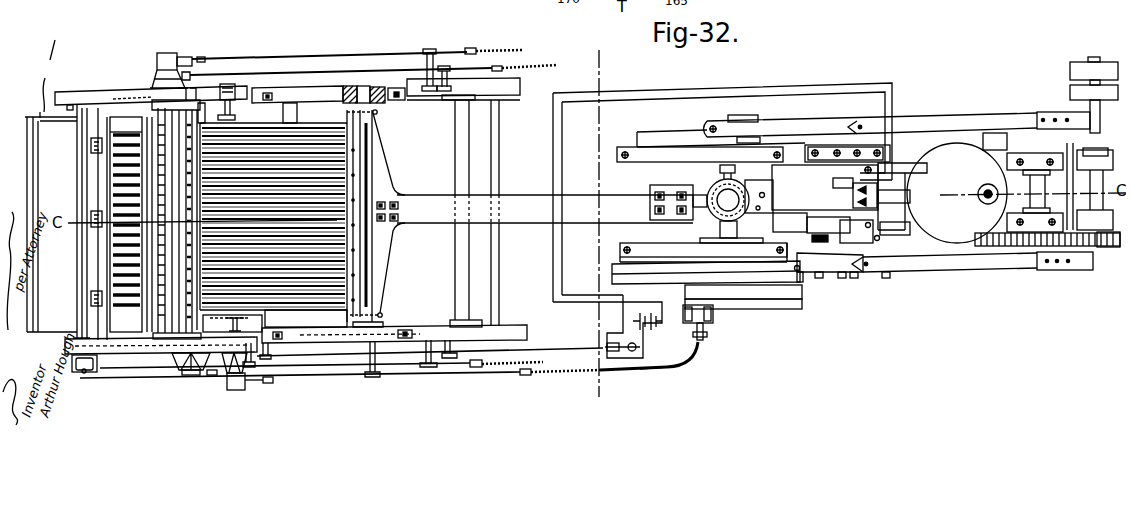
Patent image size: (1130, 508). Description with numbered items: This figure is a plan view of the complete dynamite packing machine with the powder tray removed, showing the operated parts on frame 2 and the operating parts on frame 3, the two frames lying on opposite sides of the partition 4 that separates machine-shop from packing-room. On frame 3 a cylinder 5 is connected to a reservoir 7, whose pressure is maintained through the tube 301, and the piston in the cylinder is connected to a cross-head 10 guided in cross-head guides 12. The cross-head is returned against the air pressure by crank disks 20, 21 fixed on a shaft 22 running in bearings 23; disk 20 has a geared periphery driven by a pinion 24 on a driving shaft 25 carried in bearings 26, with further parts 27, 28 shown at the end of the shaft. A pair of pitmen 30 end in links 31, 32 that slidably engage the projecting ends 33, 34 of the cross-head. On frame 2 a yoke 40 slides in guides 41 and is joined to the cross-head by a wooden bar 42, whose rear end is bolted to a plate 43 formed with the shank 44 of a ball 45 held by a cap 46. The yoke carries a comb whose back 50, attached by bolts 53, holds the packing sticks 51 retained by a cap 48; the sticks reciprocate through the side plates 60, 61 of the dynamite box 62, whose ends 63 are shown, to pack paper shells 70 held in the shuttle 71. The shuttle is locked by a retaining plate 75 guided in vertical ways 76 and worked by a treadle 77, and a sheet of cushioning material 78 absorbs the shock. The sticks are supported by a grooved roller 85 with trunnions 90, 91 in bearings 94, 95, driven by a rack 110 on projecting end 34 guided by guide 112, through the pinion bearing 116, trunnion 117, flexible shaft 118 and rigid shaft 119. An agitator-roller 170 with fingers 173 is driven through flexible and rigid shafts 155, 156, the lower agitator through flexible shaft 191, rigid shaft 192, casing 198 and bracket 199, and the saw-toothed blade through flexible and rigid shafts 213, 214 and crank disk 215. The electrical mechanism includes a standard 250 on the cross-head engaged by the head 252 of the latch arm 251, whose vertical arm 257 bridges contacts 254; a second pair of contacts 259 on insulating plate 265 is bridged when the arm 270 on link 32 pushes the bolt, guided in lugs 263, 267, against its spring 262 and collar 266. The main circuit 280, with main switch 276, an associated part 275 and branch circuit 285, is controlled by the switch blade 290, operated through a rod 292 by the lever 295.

The frame 2 is at (77, 92).
The frame 3 is at (935, 143).
The partition 4 is at (598, 250).
The cylinder 5 is at (908, 166).
The reservoir 7 is at (962, 248).
The cross-head 10 is at (738, 173).
The cross-head guides 12 is at (675, 132).
The crank disk 20 is at (1040, 247).
The crank disk 21 is at (1000, 143).
The shaft 22 is at (1032, 188).
The bearings 23 is at (1032, 160).
The pinion 24 is at (1115, 248).
The driving shaft 25 is at (1093, 57).
The bearings 26 is at (1103, 153).
The collar 27 is at (1075, 92).
The collar 28 is at (1077, 68).
The pitmen 30 is at (925, 115).
The link 31 is at (828, 121).
The link 32 is at (808, 284).
The projecting end 33 is at (750, 143).
The projecting end 34 is at (726, 300).
The yoke 40 is at (382, 188).
The guides 41 is at (320, 95).
The wooden bar 42 is at (525, 216).
The plate 43 is at (682, 223).
The shank 44 is at (697, 187).
The ball 45 is at (703, 258).
The cap 46 is at (718, 220).
The cap 48 is at (368, 272).
The back 50 is at (347, 308).
The packing sticks 51 is at (320, 135).
The bolts 53 is at (378, 113).
The side plate 60 is at (202, 308).
The side plate 61 is at (126, 140).
The dynamite box 62 is at (165, 303).
The ends 63 is at (150, 146).
The paper shells 70 is at (120, 146).
The shuttle 71 is at (105, 190).
The retaining plate 75 is at (87, 276).
The vertical ways 76 is at (72, 98).
The treadle 77 is at (38, 257).
The sheet of cushioning material 78 is at (90, 208).
The roller 85 is at (237, 118).
The trunnion 90 is at (240, 326).
The trunnion 91 is at (232, 108).
The bearing 94 is at (172, 55).
The bearing 95 is at (230, 84).
The rack 110 is at (767, 309).
The guide 112 is at (612, 273).
The bearing 116 is at (702, 340).
The trunnion 117 is at (712, 322).
The flexible shaft 118 is at (668, 369).
The rigid shaft 119 is at (470, 374).
The flexible shaft 155 is at (492, 49).
The rigid shaft 156 is at (328, 53).
The agitator-roller 170 is at (152, 112).
The fingers 173 is at (155, 168).
The flexible shaft 191 is at (503, 367).
The rigid shaft 192 is at (410, 367).
The casing 198 is at (193, 375).
The bracket 199 is at (160, 98).
The flexible shaft 213 is at (542, 65).
The rigid shaft 214 is at (293, 74).
The crank disk 215 is at (207, 57).
The standard 250 is at (737, 232).
The horizontal arm 251 is at (793, 197).
The head 252 is at (770, 155).
The contacts 254 is at (865, 171).
The vertical arm 257 is at (848, 197).
The contacts 259 is at (887, 272).
The spring 262 is at (843, 272).
The lug 263 is at (853, 272).
The insulating plate 265 is at (805, 228).
The collar 266 is at (847, 214).
The lug 267 is at (820, 272).
The arm 270 is at (794, 268).
The contact 275 is at (656, 330).
The main switch 276 is at (603, 346).
The main circuit 280 is at (707, 88).
The branch circuit 285 is at (908, 195).
The blade 290 is at (632, 369).
The rod 292 is at (545, 348).
The lever 295 is at (82, 373).
The tube 301 is at (985, 203).